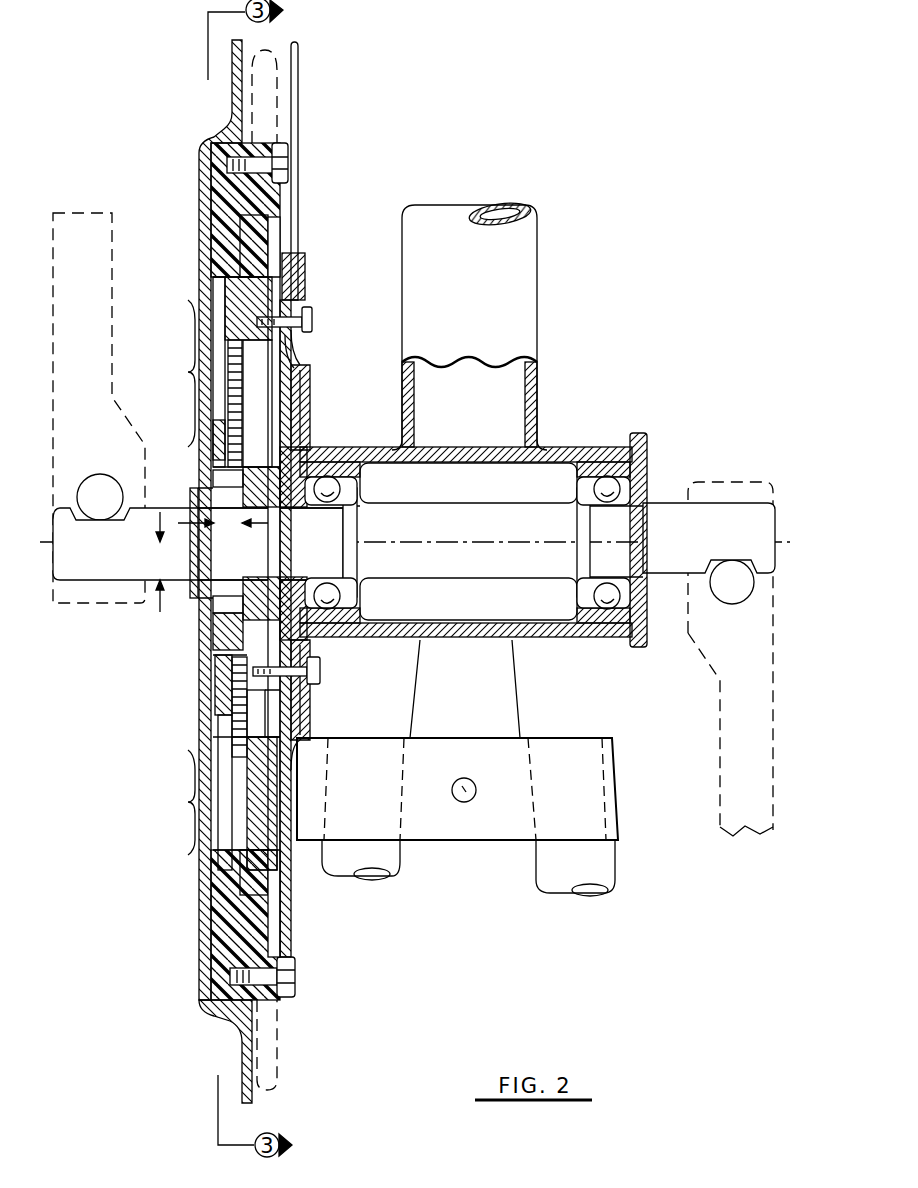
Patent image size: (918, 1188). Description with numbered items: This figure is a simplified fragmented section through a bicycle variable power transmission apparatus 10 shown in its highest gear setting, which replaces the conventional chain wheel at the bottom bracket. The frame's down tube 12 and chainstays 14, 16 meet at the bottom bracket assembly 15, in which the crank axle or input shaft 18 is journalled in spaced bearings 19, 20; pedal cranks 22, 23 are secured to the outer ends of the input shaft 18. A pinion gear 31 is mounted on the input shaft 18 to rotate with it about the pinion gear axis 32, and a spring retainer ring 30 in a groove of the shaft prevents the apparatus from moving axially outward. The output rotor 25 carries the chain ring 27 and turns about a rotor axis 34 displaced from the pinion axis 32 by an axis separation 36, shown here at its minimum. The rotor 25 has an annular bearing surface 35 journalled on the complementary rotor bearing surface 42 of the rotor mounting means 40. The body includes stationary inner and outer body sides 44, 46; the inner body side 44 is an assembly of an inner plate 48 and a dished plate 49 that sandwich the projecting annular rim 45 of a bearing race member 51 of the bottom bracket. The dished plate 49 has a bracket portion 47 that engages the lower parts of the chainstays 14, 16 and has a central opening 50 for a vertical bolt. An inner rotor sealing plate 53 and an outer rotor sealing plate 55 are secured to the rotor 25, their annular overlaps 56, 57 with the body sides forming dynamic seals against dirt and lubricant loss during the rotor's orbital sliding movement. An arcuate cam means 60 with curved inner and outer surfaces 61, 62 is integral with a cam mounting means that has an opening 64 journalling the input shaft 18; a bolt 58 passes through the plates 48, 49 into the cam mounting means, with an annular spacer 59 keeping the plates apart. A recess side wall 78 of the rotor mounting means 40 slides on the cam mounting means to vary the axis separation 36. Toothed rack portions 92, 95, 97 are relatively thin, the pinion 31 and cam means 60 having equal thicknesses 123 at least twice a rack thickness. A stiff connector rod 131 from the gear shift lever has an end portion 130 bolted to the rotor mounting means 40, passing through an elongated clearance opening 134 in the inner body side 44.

The transmission apparatus 10 is at (196, 130).
The down tube 12 is at (526, 262).
The chainstay 14 is at (386, 858).
The bottom bracket assembly 15 is at (564, 413).
The chainstay 16 is at (602, 868).
The input shaft 18 is at (500, 578).
The bearing 19 is at (343, 600).
The bearing 20 is at (634, 590).
The pedal crank 22 is at (82, 225).
The pedal crank 23 is at (752, 830).
The output rotor 25 is at (210, 182).
The chain ring 27 is at (276, 50).
The spring retainer ring 30 is at (194, 489).
The pinion gear 31 is at (222, 606).
The pinion gear axis 32 is at (508, 540).
The rotor axis 34 is at (166, 568).
The annular bearing surface 35 is at (215, 288).
The axis separation 36 is at (160, 605).
The rotor mounting means 40 is at (216, 296).
The rotor bearing surface 42 is at (240, 262).
The inner body side 44 is at (325, 389).
The annular rim 45 is at (307, 452).
The outer body side 46 is at (209, 403).
The bracket portion 47 is at (480, 832).
The inner plate 48 is at (313, 372).
The dished plate 49 is at (312, 422).
The central opening 50 is at (472, 796).
The bearing race member 51 is at (306, 498).
The inner rotor sealing plate 53 is at (283, 225).
The outer rotor sealing plate 55 is at (206, 215).
The inner overlap 56 is at (306, 332).
The outer overlap 57 is at (188, 372).
The bolt 58 is at (320, 664).
The annular spacer 59 is at (306, 708).
The cam means 60 is at (206, 660).
The inner surface 61 is at (211, 634).
The outer surface 62 is at (222, 690).
The opening 64 is at (284, 549).
The recess side wall 78 is at (300, 727).
The toothed rack portion 92 is at (283, 432).
The toothed rack portion 95 is at (210, 440).
The toothed rack portion 97 is at (226, 720).
The thickness 123 is at (276, 526).
The end portion 130 is at (306, 285).
The connector rod 131 is at (298, 112).
The clearance opening 134 is at (303, 348).